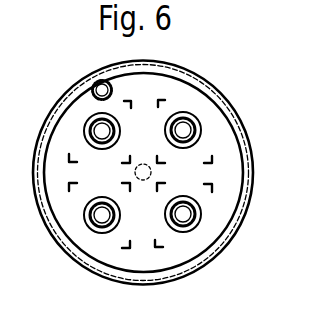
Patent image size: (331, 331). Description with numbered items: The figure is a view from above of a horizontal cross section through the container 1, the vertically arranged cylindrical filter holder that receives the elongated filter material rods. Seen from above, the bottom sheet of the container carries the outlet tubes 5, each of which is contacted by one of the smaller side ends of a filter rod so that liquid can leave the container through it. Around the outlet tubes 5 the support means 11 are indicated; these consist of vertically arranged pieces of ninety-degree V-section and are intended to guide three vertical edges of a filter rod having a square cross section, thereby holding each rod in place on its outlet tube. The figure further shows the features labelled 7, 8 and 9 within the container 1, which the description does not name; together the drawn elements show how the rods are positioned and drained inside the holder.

The container 1 is at (244, 131).
The outlet tube 5 is at (200, 212).
The insulating insert face 7 is at (198, 242).
The central bore 8 is at (133, 173).
The coding hole 9 is at (93, 83).
The support means 11 is at (162, 98).